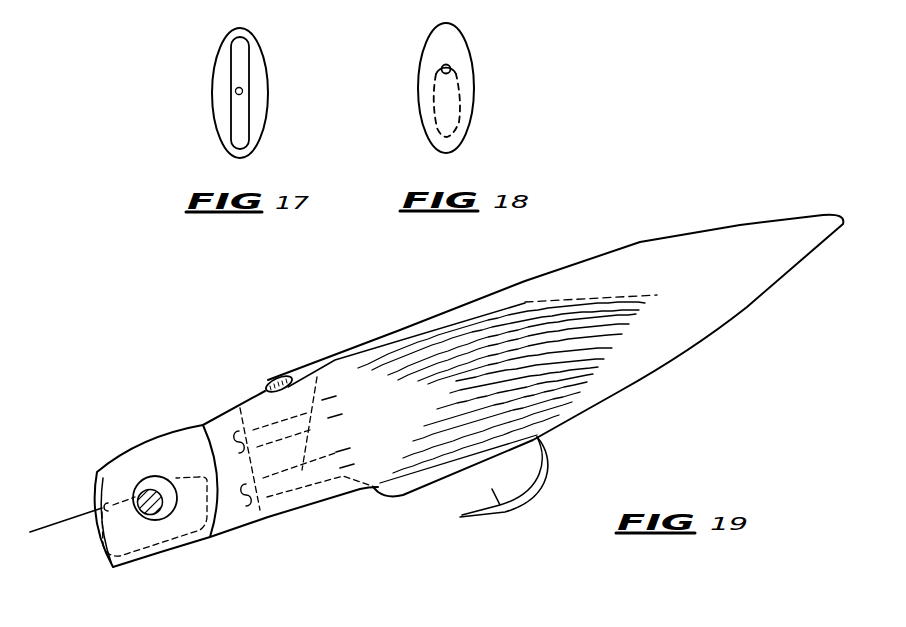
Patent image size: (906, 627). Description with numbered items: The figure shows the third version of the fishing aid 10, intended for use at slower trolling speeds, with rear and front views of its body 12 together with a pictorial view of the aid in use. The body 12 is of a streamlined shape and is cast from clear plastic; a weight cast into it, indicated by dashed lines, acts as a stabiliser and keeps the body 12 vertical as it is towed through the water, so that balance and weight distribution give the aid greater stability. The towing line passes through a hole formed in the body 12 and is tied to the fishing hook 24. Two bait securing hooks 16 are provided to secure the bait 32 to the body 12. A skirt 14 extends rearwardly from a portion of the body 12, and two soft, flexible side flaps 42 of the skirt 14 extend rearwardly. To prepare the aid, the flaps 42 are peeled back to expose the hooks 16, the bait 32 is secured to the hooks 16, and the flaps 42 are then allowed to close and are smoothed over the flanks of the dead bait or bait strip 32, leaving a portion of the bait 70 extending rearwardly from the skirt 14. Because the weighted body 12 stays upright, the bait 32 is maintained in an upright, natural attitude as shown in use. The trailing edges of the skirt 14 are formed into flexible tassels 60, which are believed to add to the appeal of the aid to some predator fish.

In FIG. 19, the fishing aid 10 is at (293, 530).
In FIG. 17, the body 12 is at (212, 90).
In FIG. 18, the body 12 is at (419, 85).
In FIG. 19, the body 12 is at (125, 464).
In FIG. 19, the skirt 14 is at (370, 468).
In FIG. 19, the bait securing hooks 16 is at (270, 420).
In FIG. 19, the fishing hook 24 is at (548, 455).
In FIG. 19, the bait 32 is at (653, 258).
In FIG. 19, the side flaps 42 is at (478, 342).
In FIG. 19, the tassels 60 is at (162, 476).
In FIG. 19, the portion of the bait 70 is at (763, 280).